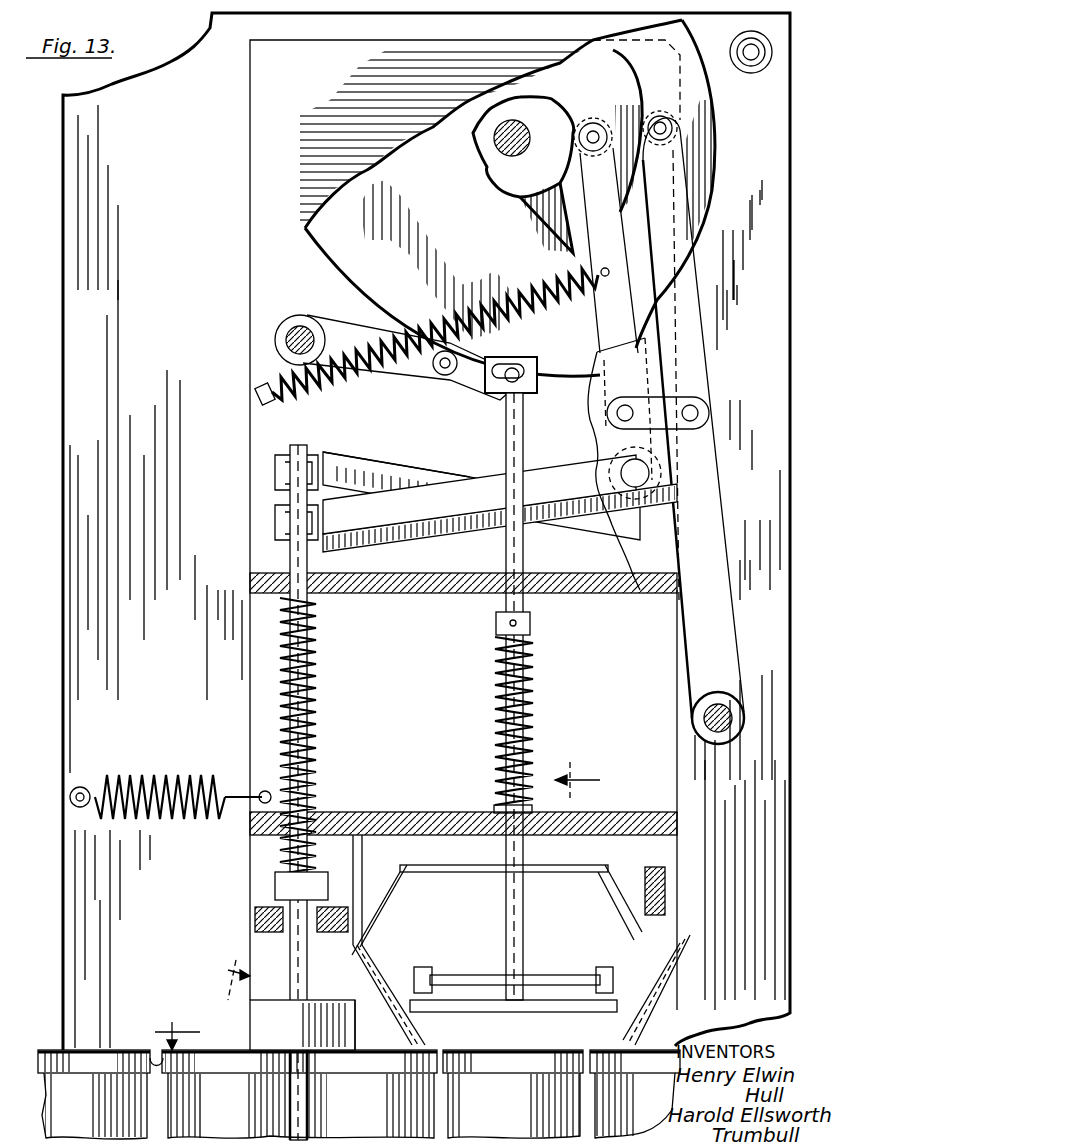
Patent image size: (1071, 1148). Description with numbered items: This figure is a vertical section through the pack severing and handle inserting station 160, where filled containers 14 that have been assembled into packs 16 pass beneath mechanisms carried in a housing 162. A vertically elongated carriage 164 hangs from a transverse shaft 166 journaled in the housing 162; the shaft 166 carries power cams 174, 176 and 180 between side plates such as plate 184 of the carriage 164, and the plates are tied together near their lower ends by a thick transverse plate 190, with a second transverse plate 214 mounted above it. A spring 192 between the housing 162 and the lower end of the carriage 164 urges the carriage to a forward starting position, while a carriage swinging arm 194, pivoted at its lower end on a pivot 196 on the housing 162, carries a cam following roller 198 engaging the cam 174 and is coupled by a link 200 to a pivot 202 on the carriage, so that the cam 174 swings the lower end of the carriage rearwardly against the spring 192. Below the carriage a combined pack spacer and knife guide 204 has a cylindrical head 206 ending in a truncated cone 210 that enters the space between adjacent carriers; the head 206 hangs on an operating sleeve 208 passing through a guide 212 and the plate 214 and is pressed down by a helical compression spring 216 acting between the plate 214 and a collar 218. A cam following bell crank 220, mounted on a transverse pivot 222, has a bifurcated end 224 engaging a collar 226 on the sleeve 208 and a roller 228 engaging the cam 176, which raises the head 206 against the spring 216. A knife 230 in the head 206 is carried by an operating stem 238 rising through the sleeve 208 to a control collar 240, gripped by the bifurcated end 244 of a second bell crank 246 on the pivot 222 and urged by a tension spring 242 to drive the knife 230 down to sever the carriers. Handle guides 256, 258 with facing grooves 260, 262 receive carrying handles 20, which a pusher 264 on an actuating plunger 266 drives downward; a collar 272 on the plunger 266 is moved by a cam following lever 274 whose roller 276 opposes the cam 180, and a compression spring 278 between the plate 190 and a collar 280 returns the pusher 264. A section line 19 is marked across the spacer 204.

The housing 162 is at (70, 150).
The carriage 164 is at (252, 695).
The transverse shaft 166 is at (505, 145).
The power cam 174 is at (610, 130).
The power cam 176 is at (560, 205).
The power cam 180 is at (350, 258).
The side plate 184 is at (275, 283).
The cam following roller 198 is at (672, 128).
The cam following roller 228 is at (597, 122).
The tension spring 242 is at (450, 310).
The roller 276 is at (457, 360).
The collar 272 is at (537, 372).
The cam following lever 274 is at (435, 368).
The pivot 202 is at (623, 403).
The link 200 is at (665, 402).
The transverse pivot 222 is at (650, 473).
The containers 14 is at (535, 440).
The control collar 240 is at (275, 450).
The bifurcated end 244 is at (318, 458).
The bell crank 246 is at (410, 465).
The operating stem 238 is at (290, 500).
The collar 226 is at (275, 525).
The bifurcated end 224 is at (355, 538).
The cam following bell crank 220 is at (576, 497).
The transverse plate 214 is at (430, 593).
The collar 280 is at (532, 622).
The compression spring 278 is at (535, 660).
The helical compression spring 216 is at (318, 672).
The actuating plunger 266 is at (495, 700).
The carriage swinging arm 194 is at (722, 662).
The pivot 196 is at (726, 735).
The spring 192 is at (148, 780).
The transverse plate 190 is at (380, 812).
The packs 16 is at (565, 1045).
The collar 218 is at (278, 878).
The guide 212 is at (270, 908).
The pack severing and handle inserting station 160 is at (270, 960).
The handle guide 256 is at (385, 940).
The operating sleeve 208 is at (395, 960).
The groove 262 is at (672, 955).
The handle guide 258 is at (640, 985).
The handle inserting shoe or pusher 264 is at (486, 990).
The groove 260 is at (385, 976).
The combined pack spacer and severing knife guide 204 is at (248, 1020).
The cylindrical head 206 is at (320, 1018).
The carrying handle 20 is at (782, 958).
The section line 19 is at (190, 1110).
The truncated cone 210 is at (270, 1085).
The knife 230 is at (308, 1090).